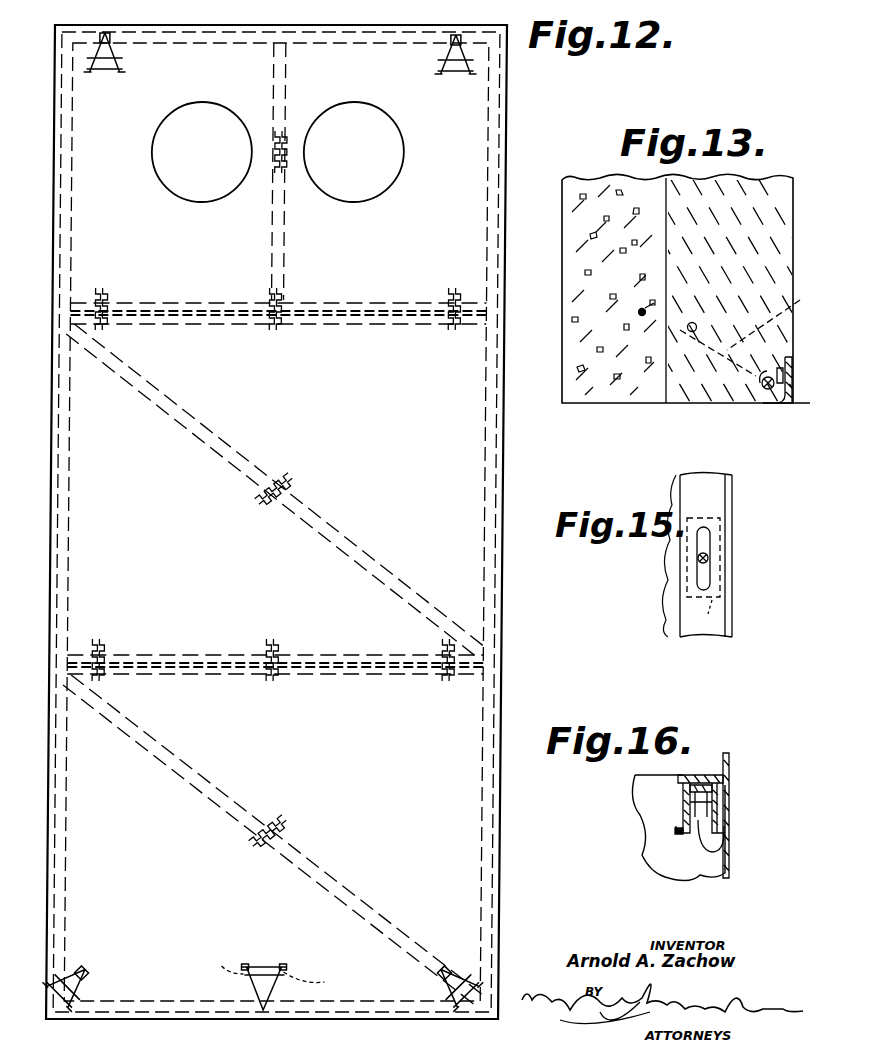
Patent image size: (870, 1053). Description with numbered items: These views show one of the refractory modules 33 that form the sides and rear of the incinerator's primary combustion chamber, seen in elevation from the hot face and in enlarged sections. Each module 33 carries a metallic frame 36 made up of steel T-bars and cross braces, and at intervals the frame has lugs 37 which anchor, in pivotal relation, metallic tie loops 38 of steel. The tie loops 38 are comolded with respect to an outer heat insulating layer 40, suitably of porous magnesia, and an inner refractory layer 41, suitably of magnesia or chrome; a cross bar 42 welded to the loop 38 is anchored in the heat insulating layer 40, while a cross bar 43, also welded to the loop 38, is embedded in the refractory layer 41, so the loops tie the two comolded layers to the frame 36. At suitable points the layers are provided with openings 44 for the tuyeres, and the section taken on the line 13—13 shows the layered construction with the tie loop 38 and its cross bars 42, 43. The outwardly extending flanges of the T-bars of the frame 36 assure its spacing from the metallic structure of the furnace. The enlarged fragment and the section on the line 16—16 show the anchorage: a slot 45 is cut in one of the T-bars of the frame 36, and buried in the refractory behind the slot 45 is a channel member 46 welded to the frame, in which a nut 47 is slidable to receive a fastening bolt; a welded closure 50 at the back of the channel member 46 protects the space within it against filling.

In FIG. 12, the section line 13— 13 is at (250, 943).
In FIG. 15, the section line 16— 16 is at (633, 551).
In FIG. 12, the module 33 is at (523, 465).
In FIG. 13, the module 33 is at (634, 404).
In FIG. 15, the module 33 is at (668, 606).
In FIG. 16, the module 33 is at (656, 839).
In FIG. 13, the metallic frame 36 is at (790, 404).
In FIG. 15, the metallic frame 36 is at (712, 497).
In FIG. 16, the metallic frame 36 is at (730, 765).
In FIG. 13, the lug 37 is at (764, 377).
In FIG. 12, the metallic tie loop 38 is at (155, 20).
In FIG. 13, the metallic tie loop 38 is at (758, 323).
In FIG. 13, the outer heat insulating layer 40 is at (757, 188).
In FIG. 13, the inner refractory layer 41 is at (581, 183).
In FIG. 12, the cross bar 42 is at (325, 978).
In FIG. 13, the cross bar 42 is at (694, 324).
In FIG. 12, the cross bar 43 is at (215, 956).
In FIG. 13, the cross bar 43 is at (640, 312).
In FIG. 12, the opening 44 is at (277, 152).
In FIG. 15, the slot 45 is at (705, 540).
In FIG. 16, the slot 45 is at (702, 782).
In FIG. 15, the channel member 46 is at (706, 619).
In FIG. 16, the channel member 46 is at (703, 818).
In FIG. 15, the nut 47 is at (706, 558).
In FIG. 16, the nut 47 is at (707, 792).
In FIG. 16, the welded closure 50 is at (715, 850).